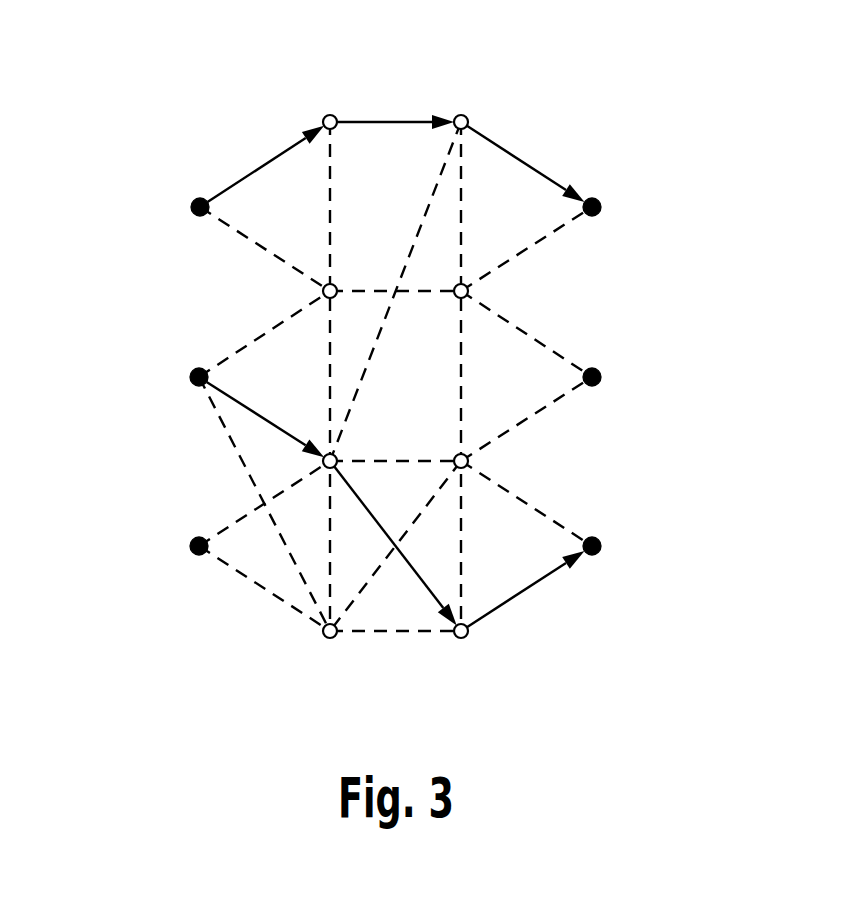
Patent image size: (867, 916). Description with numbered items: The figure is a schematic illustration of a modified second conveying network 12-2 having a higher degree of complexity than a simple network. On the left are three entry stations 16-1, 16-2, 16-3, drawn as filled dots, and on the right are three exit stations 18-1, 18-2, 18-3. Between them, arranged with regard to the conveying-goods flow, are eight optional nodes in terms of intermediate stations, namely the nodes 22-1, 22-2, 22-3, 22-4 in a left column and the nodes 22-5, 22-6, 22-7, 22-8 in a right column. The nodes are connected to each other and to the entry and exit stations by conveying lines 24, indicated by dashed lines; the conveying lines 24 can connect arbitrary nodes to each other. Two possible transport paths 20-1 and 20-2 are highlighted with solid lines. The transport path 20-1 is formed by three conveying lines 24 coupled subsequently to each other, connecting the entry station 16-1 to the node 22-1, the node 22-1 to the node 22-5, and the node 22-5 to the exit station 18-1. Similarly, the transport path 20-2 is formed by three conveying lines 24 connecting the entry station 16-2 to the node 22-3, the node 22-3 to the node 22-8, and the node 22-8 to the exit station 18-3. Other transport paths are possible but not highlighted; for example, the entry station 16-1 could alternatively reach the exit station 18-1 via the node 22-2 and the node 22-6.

The second conveying network 12-2 is at (646, 105).
The entry station 16-1 is at (191, 207).
The entry station 16-2 is at (190, 377).
The entry station 16-3 is at (190, 546).
The exit station 18-1 is at (601, 207).
The exit station 18-2 is at (601, 377).
The exit station 18-3 is at (601, 546).
The transport path 20-1 is at (389, 98).
The transport path 20-2 is at (428, 550).
The node 22-1 is at (330, 114).
The node 22-2 is at (322, 291).
The node 22-3 is at (337, 456).
The node 22-4 is at (330, 639).
The node 22-5 is at (461, 114).
The node 22-6 is at (469, 291).
The node 22-7 is at (469, 461).
The node 22-8 is at (461, 639).
The conveying line 24 is at (258, 243).